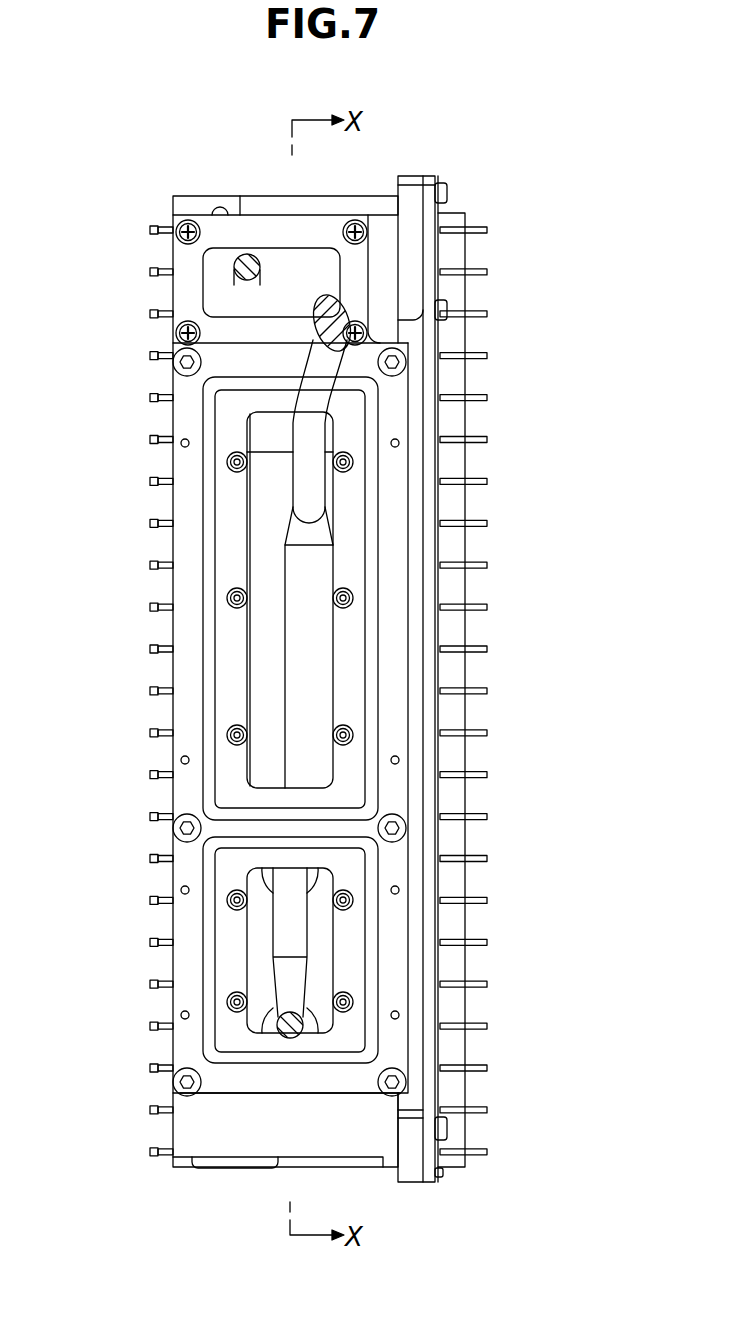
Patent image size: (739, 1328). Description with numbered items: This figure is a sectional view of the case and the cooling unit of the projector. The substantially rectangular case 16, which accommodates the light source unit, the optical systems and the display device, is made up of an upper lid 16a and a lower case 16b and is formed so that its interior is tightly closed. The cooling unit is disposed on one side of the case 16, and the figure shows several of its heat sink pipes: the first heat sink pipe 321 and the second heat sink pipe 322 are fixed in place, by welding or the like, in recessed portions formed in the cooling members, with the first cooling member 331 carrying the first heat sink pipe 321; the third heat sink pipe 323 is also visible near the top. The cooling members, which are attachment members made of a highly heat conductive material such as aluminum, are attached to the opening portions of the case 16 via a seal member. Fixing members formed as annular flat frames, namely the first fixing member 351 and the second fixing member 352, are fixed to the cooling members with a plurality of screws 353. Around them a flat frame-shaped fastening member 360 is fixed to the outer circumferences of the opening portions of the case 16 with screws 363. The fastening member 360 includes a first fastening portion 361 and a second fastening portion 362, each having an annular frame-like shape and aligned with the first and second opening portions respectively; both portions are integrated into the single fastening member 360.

The case 16 is at (480, 180).
The upper lid 16a is at (457, 255).
The lower case 16b is at (183, 197).
The first heat sink pipe 321 is at (320, 397).
The second heat sink pipe 322 is at (297, 920).
The third heat sink pipe 323 is at (247, 256).
The first cooling member 331 is at (263, 505).
The first fixing member 351 is at (353, 548).
The second fixing member 352 is at (352, 956).
The screws 353 is at (352, 462).
The fastening member 360 is at (398, 793).
The first fastening portion 361 is at (390, 635).
The second fastening portion 362 is at (392, 1037).
The screws 363 is at (405, 1078).